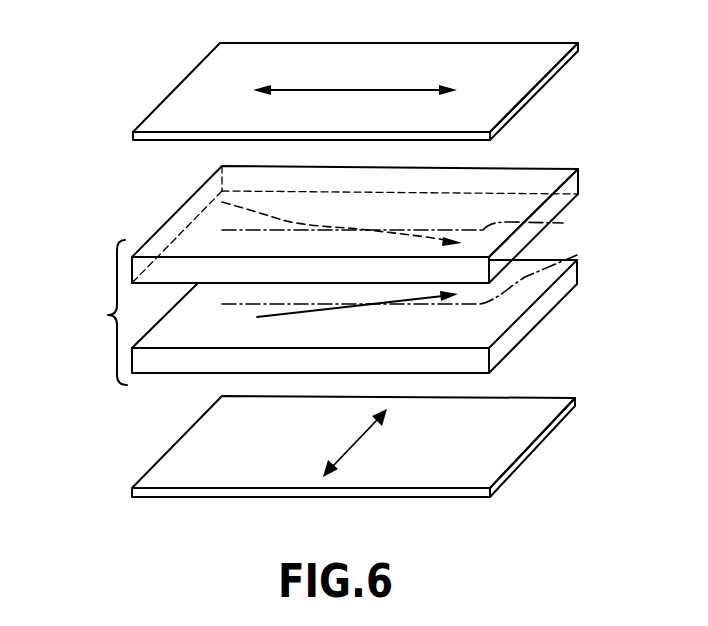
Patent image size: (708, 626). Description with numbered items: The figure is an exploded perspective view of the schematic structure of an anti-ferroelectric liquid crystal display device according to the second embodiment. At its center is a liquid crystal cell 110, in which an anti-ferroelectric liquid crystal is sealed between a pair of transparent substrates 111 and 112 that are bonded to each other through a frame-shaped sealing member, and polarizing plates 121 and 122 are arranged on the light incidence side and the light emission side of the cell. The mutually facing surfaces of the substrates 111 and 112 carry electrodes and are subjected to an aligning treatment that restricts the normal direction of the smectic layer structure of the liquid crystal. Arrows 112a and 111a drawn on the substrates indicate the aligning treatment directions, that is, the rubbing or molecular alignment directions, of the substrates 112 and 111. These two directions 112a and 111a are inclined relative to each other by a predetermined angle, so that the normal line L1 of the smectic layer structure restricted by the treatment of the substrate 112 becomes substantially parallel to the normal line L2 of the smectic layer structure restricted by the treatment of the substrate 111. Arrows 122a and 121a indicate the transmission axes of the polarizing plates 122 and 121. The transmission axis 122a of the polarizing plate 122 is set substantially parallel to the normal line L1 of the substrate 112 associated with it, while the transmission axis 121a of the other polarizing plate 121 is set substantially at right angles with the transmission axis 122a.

The liquid crystal cell 110 is at (108, 315).
The transparent substrate 111 is at (530, 320).
The aligning treatment direction 111a is at (272, 320).
The transparent substrate 112 is at (553, 168).
The aligning treatment direction 112a is at (222, 202).
The polarizing plate 121 is at (518, 442).
The transmission axis 121a is at (357, 445).
The polarizing plate 122 is at (532, 72).
The transmission axis 122a is at (418, 88).
The normal line of the smectic layer structure L1 is at (563, 223).
The normal line of the smectic layer structure L2 is at (577, 255).